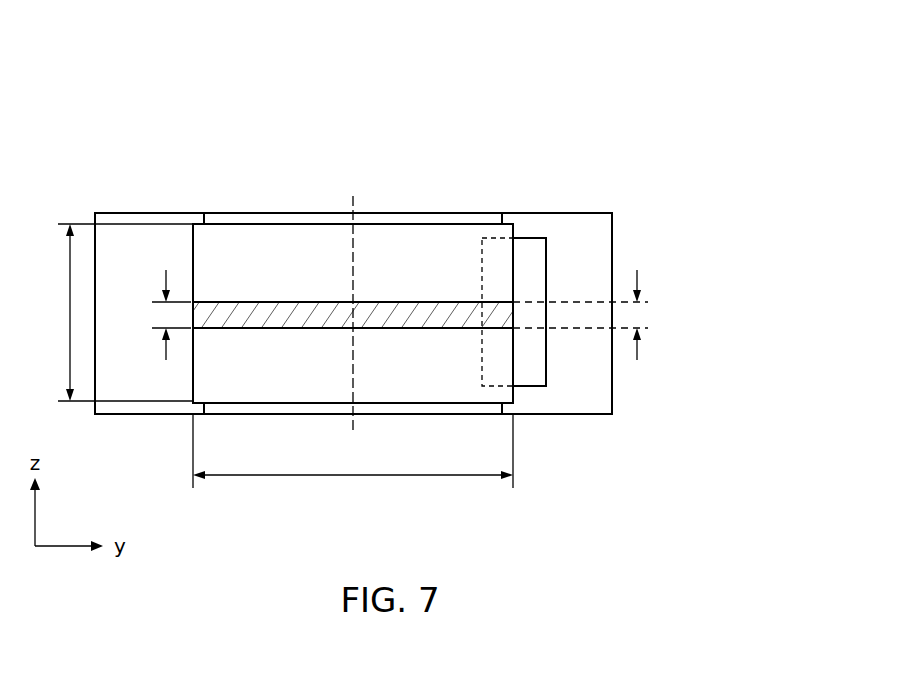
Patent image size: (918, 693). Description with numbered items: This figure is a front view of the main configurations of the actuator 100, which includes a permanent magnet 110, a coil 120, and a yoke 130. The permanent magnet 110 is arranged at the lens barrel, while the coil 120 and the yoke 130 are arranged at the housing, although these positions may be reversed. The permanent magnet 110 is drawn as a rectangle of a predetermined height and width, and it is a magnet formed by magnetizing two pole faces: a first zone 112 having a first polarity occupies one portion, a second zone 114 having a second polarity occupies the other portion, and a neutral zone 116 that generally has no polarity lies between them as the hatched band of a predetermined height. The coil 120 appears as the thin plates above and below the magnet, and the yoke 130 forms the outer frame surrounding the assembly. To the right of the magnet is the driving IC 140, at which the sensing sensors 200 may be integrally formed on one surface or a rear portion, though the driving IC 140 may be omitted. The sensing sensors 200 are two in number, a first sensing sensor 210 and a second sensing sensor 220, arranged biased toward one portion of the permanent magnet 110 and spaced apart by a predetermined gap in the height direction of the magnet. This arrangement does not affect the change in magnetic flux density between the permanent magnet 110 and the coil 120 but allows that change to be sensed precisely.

The actuator 100 is at (540, 99).
The permanent magnet 110 is at (351, 249).
The first zone 112 is at (296, 272).
The second zone 114 is at (243, 350).
The neutral zone 116 is at (228, 135).
The coil 120 is at (458, 213).
The yoke 130 is at (585, 222).
The driving IC 140 is at (537, 250).
The sensing sensors 200 is at (633, 312).
The first sensing sensor 210 is at (513, 302).
The second sensing sensor 220 is at (513, 328).